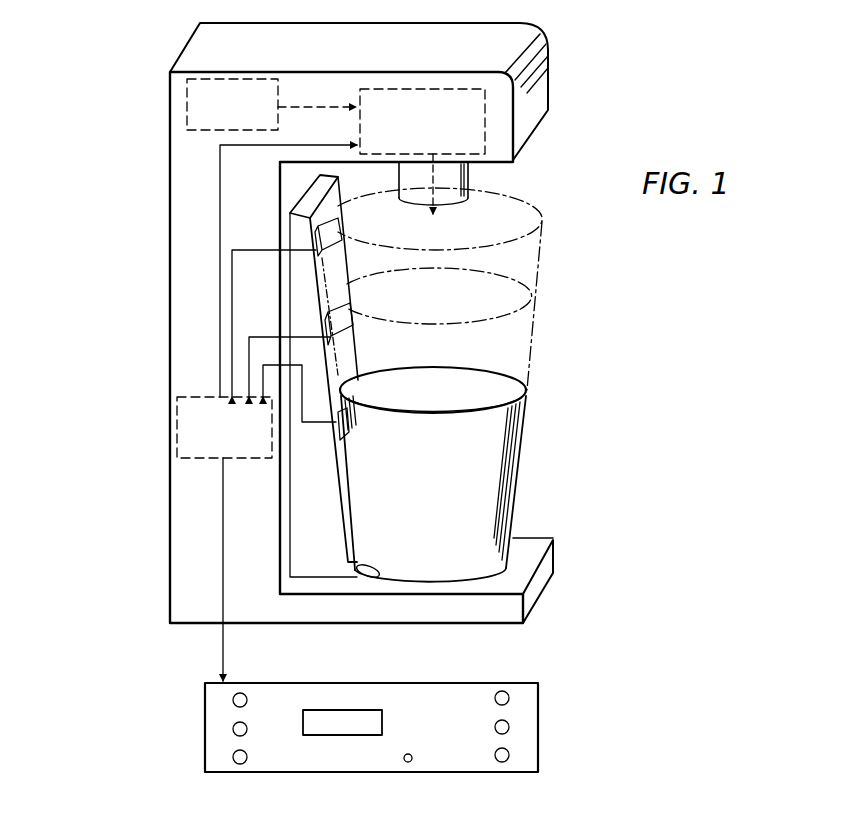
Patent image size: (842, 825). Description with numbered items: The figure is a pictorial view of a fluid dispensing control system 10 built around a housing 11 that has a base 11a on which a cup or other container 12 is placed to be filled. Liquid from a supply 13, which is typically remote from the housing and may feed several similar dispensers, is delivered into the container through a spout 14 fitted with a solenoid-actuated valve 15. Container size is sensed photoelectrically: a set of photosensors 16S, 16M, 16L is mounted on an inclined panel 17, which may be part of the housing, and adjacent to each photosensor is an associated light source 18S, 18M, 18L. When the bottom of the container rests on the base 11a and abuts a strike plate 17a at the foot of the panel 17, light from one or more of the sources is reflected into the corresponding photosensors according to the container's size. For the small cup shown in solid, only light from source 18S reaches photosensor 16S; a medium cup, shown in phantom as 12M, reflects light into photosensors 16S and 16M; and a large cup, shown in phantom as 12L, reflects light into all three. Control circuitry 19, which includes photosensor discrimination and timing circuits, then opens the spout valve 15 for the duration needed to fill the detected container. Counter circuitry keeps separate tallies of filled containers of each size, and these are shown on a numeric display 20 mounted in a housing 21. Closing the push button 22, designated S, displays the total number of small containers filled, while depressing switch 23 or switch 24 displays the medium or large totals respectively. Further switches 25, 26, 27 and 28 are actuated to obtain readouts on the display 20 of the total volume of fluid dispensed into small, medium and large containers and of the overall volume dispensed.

The fluid dispensing control system 10 is at (114, 650).
The housing 11 is at (170, 158).
The base 11a is at (533, 545).
The container 12 is at (518, 442).
The large cup 12L is at (543, 238).
The medium cup 12M is at (531, 315).
The liquid supply 13 is at (187, 117).
The spout 14 is at (468, 182).
The solenoid-actuated valve 15 is at (485, 145).
The photosensor 16L is at (343, 228).
The photosensor 16M is at (350, 316).
The photosensor 16S is at (352, 420).
The inclined panel 17 is at (305, 205).
The strike plate 17a is at (378, 577).
The light source 18L is at (315, 238).
The light source 18M is at (343, 334).
The light source 18S is at (350, 435).
The control circuitry 19 is at (177, 446).
The numeric display 20 is at (312, 710).
The housing 21 is at (538, 683).
The push button 22 is at (233, 757).
The switch 23 is at (233, 732).
The switch 24 is at (243, 692).
The switch 25 is at (509, 756).
The switch 26 is at (509, 727).
The switch 27 is at (509, 698).
The switch 28 is at (408, 762).